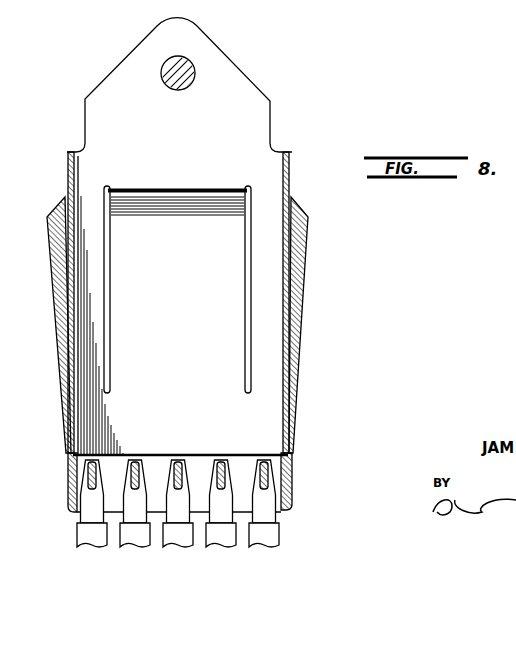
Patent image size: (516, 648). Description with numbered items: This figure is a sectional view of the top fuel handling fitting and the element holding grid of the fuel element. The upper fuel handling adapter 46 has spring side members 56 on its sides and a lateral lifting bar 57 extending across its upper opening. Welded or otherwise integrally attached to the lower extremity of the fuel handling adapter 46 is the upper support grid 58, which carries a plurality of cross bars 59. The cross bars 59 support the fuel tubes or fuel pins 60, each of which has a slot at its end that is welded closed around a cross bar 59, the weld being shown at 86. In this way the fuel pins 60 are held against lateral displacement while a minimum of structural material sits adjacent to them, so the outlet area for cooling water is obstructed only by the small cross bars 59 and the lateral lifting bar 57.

The upper fuel handling adapter 46 is at (258, 142).
The spring side members 56 is at (304, 260).
The lateral lifting bar 57 is at (192, 81).
The upper support grid 58 is at (237, 462).
The cross bars 59 is at (214, 484).
The weld 86 is at (264, 460).
The fuel pins 60 is at (274, 540).